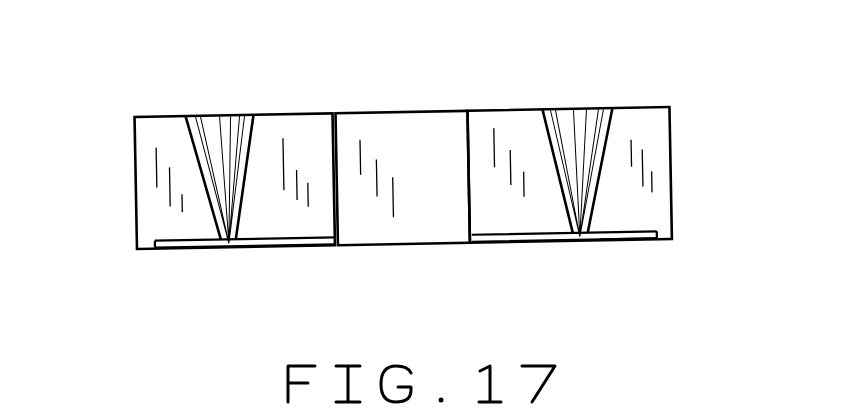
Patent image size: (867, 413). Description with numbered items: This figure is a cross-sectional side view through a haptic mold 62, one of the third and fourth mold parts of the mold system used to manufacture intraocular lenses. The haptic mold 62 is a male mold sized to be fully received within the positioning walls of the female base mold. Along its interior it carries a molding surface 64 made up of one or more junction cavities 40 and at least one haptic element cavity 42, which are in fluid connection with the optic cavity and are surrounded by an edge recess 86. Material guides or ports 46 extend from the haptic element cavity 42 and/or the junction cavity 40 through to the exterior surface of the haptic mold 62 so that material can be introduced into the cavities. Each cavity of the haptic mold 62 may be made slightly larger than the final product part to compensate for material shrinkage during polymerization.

The junction cavity 40 is at (327, 243).
The haptic element cavity 42 is at (187, 247).
The material guide or port 46 is at (215, 132).
The haptic mold 62 is at (645, 155).
The molding surface 64 is at (626, 242).
The edge recess 86 is at (157, 250).